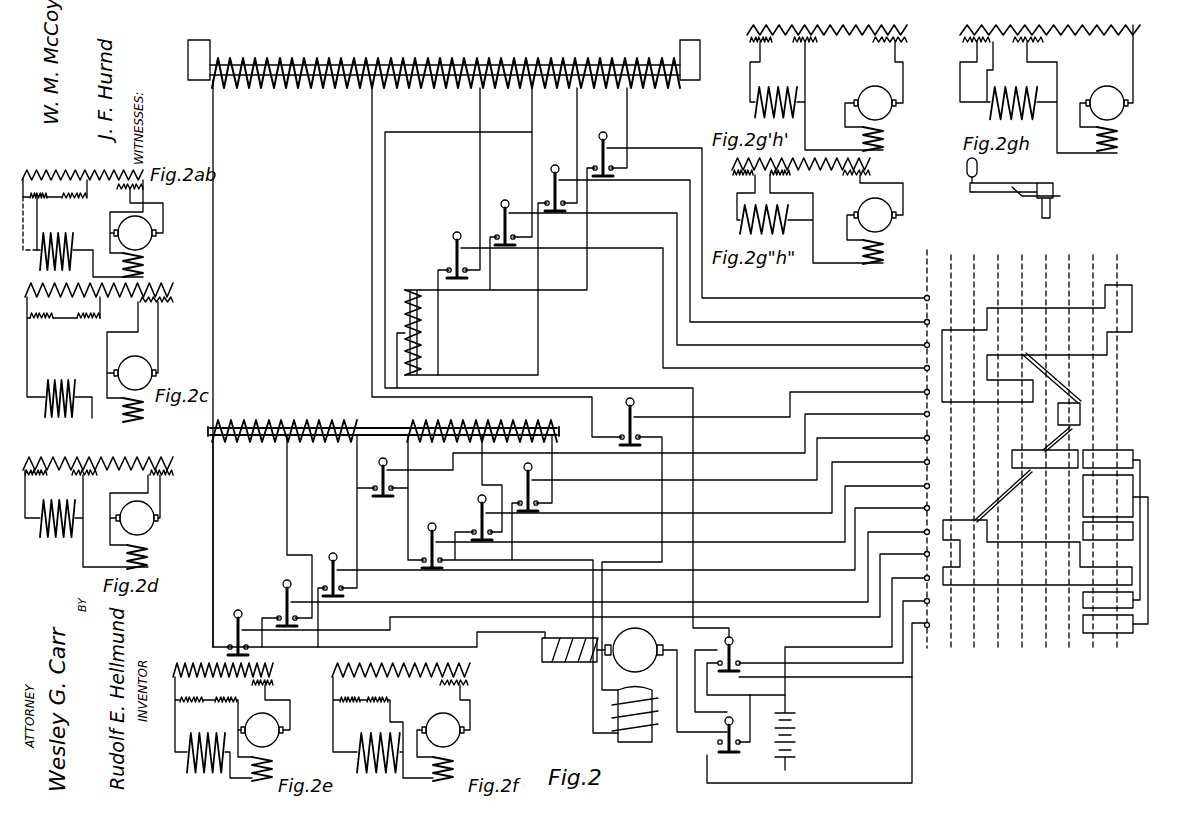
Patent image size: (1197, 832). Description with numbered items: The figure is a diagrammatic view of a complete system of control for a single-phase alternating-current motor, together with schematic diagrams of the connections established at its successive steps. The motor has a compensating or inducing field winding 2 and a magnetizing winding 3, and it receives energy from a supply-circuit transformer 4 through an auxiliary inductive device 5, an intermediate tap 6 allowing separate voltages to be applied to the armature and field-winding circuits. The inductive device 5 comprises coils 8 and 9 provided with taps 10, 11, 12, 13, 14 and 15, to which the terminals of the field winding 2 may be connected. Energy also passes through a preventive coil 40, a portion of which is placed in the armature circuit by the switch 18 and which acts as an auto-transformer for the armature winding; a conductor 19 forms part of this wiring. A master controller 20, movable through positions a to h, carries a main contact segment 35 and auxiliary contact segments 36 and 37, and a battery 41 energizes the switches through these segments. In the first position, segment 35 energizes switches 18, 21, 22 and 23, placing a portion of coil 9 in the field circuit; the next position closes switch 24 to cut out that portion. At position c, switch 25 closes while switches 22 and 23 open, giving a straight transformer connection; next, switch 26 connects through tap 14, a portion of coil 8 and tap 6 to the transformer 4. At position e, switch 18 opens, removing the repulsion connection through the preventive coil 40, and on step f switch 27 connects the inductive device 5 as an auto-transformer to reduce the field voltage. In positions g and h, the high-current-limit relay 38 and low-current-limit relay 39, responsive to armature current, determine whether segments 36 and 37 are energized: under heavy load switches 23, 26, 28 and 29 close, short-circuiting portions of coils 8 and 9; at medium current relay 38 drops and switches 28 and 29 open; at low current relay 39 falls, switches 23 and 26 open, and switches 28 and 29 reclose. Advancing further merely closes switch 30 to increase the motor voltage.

The compensating or inducing field winding 2 is at (556, 668).
The magnetizing winding 3 is at (645, 744).
The supply-circuit transformer 4 is at (527, 58).
The auxiliary inductive device 5 is at (441, 416).
The intermediate tap 6 is at (371, 213).
The coil 8 is at (413, 421).
The coil 9 is at (294, 416).
The tap 10 is at (212, 494).
The tap 11 is at (286, 468).
The tap 12 is at (356, 468).
The tap 13 is at (407, 516).
The tap 14 is at (481, 478).
The tap 15 is at (548, 468).
The switch 18 is at (621, 425).
The conductor 19 is at (214, 212).
The master controller 20 is at (1180, 383).
The switch 21 is at (499, 203).
The switch 22 is at (449, 236).
The switch 23 is at (279, 590).
The switch 24 is at (237, 615).
The switch 25 is at (549, 168).
The switch 26 is at (475, 503).
The switch 27 is at (374, 468).
The switch 28 is at (326, 562).
The switch 29 is at (424, 528).
The switch 30 is at (598, 125).
The main contact segment 35 is at (1133, 299).
The auxiliary contact segment 36 is at (1136, 458).
The auxiliary contact segment 37 is at (1080, 503).
The high-current-limit relay 38 is at (803, 703).
The low-current-limit relay 39 is at (741, 640).
The preventive coil 40 is at (405, 309).
The battery 41 is at (800, 739).